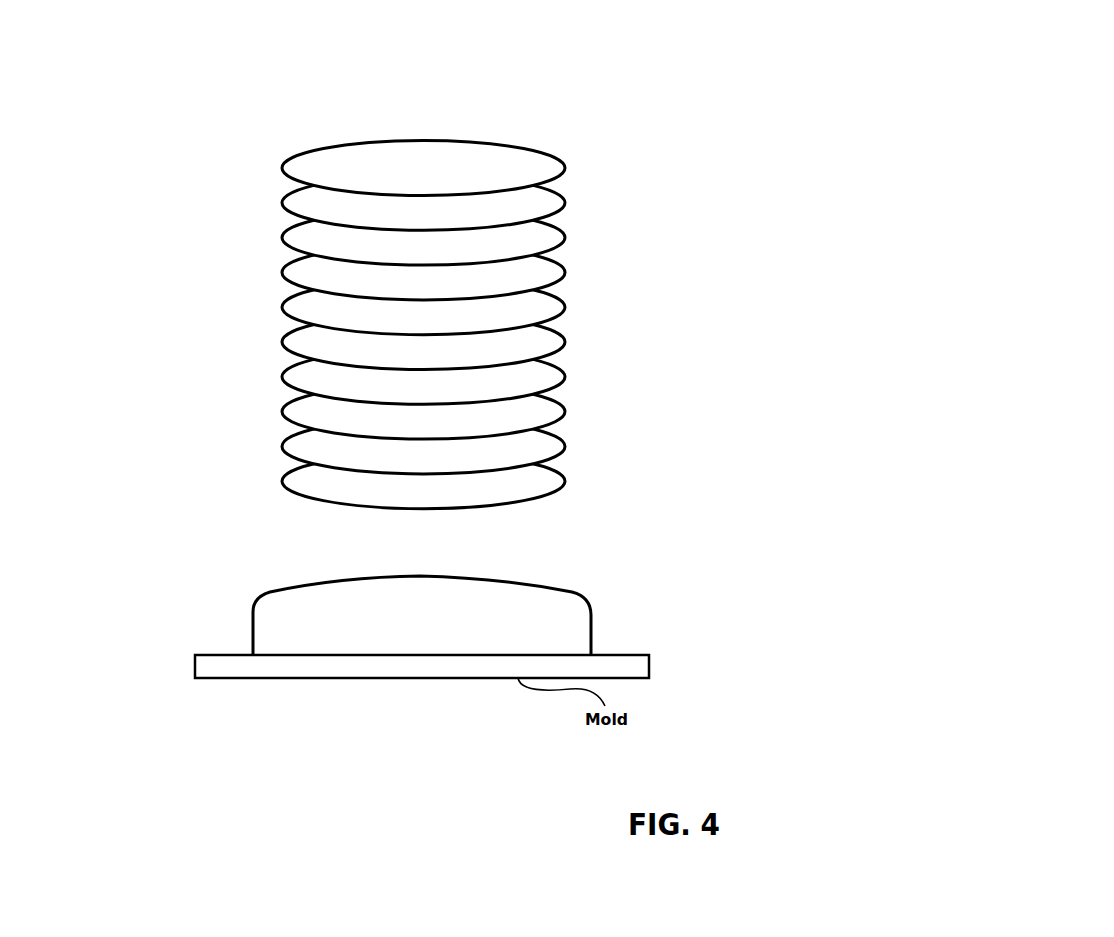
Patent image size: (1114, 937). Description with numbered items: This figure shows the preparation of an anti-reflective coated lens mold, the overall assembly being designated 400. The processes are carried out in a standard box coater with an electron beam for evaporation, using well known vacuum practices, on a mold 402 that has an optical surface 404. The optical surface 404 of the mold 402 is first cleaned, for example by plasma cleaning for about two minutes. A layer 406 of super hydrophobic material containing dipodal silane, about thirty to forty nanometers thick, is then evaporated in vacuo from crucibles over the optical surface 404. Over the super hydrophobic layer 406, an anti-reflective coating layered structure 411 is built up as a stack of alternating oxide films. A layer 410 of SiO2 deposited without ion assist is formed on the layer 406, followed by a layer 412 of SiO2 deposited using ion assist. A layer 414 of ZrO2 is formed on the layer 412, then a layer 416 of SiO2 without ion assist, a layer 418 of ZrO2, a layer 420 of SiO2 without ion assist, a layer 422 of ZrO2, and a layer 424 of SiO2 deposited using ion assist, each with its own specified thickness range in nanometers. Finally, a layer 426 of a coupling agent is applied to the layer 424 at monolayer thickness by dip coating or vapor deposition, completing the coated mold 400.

The layered optical coating structure 400 is at (500, 94).
The mold 402 is at (283, 678).
The optical surface 404 is at (293, 594).
The layer of super hydrophobic material 406 is at (565, 486).
The layer of SiO2 410 is at (565, 451).
The anti-reflective coating layered structure 411 is at (993, 212).
The layer of SiO2 412 is at (565, 417).
The layer of ZrO2 414 is at (565, 382).
The layer of SiO2 416 is at (565, 347).
The layer of ZrO2 418 is at (565, 312).
The layer of SiO2 420 is at (565, 277).
The layer of ZrO2 422 is at (565, 243).
The layer of SiO2 424 is at (565, 208).
The layer of coupling agent 426 is at (565, 173).